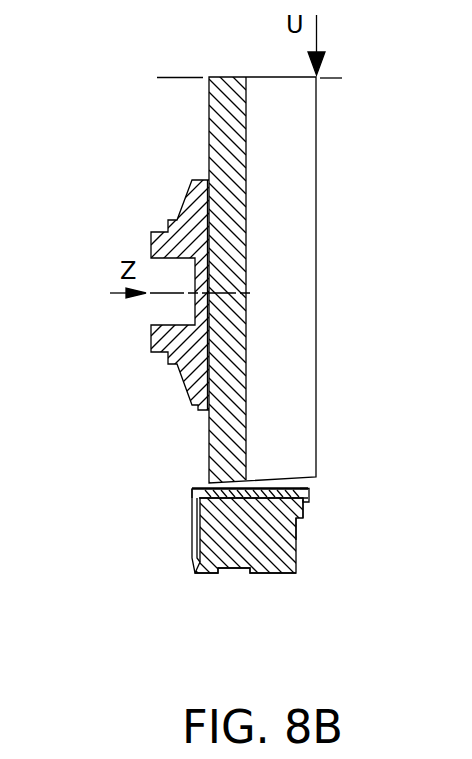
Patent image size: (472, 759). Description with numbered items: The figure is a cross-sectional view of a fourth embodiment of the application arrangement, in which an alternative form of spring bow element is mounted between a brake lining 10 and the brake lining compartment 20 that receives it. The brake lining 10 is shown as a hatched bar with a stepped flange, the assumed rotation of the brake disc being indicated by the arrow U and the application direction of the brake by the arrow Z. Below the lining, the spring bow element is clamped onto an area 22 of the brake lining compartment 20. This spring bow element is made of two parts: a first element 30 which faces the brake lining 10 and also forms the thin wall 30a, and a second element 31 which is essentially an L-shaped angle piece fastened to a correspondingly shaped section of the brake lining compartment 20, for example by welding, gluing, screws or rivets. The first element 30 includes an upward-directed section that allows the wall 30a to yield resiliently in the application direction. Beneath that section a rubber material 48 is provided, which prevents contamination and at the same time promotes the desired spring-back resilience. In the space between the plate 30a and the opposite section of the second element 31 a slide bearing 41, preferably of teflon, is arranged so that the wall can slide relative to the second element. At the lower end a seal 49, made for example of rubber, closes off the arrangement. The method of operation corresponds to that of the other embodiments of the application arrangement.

The brake lining 10 is at (347, 195).
The brake lining compartment 20 is at (302, 611).
The area 22 is at (244, 555).
The first element 30 is at (174, 486).
The wall 30a is at (303, 488).
The second element 31 is at (267, 500).
The slide bearing 41 is at (303, 522).
The rubber material 48 is at (193, 512).
The seal 49 is at (307, 500).